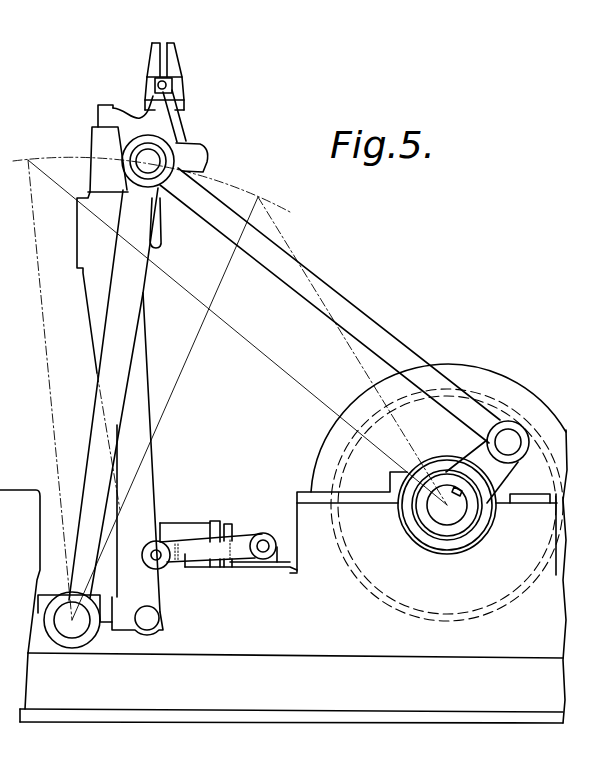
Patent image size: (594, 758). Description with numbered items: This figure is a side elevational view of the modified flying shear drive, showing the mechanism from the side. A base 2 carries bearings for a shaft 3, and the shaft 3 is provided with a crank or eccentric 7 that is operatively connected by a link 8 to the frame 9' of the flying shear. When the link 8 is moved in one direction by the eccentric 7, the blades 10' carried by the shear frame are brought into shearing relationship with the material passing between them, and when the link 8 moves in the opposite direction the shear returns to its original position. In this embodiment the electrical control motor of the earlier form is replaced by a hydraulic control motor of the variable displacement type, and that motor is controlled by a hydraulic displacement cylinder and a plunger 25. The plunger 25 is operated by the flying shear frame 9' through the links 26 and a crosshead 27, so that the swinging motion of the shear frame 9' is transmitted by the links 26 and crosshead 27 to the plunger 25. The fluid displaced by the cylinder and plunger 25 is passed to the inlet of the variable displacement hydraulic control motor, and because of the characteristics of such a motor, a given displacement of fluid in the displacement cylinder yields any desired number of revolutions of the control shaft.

The base 2 is at (345, 703).
The shaft 3 is at (446, 521).
The cranks or eccentrics 7 is at (480, 455).
The links 8 is at (379, 337).
The flying shear frame 9' is at (109, 391).
The blades 10' is at (186, 92).
The plunger 25 is at (182, 532).
The links 26 is at (239, 541).
The crosshead 27 is at (267, 563).